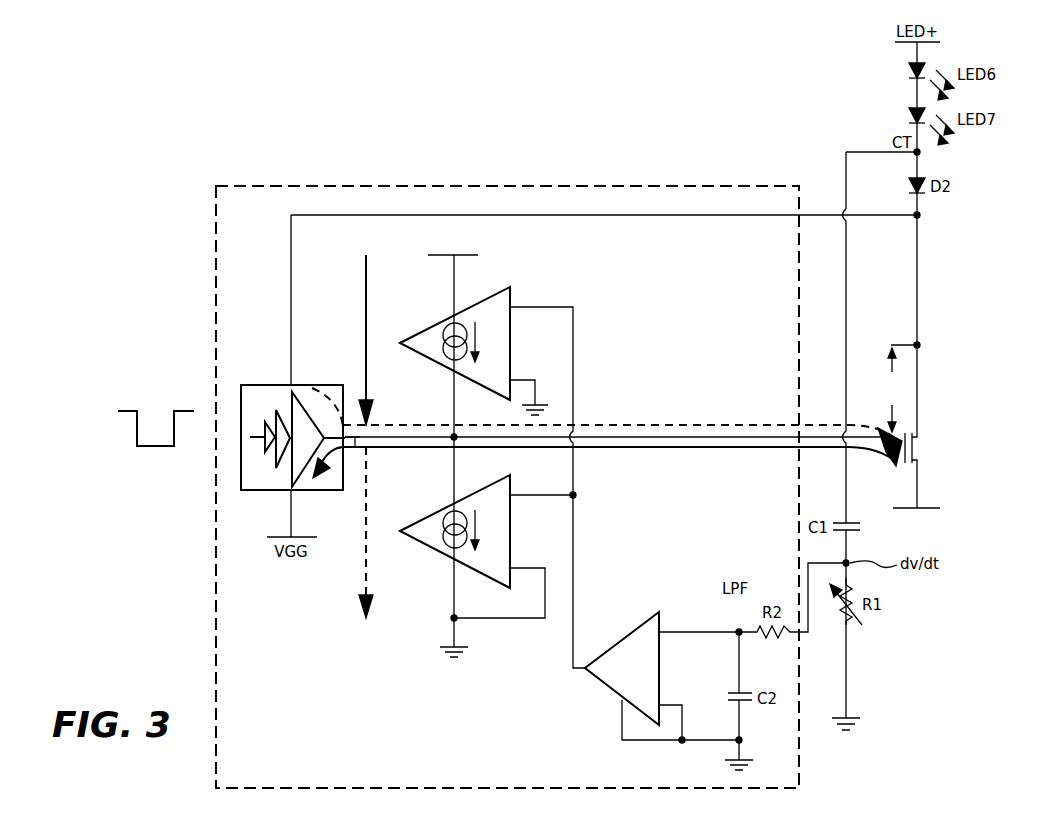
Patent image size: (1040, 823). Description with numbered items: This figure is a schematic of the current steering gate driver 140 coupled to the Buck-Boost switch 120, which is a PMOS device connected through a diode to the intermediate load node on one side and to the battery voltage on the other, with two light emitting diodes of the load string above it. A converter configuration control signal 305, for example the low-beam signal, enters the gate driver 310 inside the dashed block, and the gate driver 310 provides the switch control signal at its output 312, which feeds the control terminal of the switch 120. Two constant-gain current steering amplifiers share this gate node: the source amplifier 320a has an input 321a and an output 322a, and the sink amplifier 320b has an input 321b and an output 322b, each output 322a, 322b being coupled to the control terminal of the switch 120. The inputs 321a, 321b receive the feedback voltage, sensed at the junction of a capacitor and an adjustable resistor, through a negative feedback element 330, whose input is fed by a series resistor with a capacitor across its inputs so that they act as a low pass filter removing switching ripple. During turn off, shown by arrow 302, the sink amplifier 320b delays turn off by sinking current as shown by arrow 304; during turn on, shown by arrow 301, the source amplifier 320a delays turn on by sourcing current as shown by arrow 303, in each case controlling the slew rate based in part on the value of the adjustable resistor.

The current steering gate driver 140 is at (397, 186).
The converter configuration control signal 305 is at (156, 448).
The gate driver 310 is at (245, 384).
The arrow indicating sourcing during the on transition 303 is at (363, 302).
The arrow indicating sinking during the off transition 304 is at (363, 575).
The output of the gate driver 312 is at (357, 442).
The arrow indicating gate driver source current 302 is at (655, 425).
The arrow indicating gate driver sink current 301 is at (680, 448).
The output of the source current steering amplifier 322a is at (452, 421).
The output of the sink current steering amplifier 322b is at (452, 457).
The gate current steering source amplifier 320a is at (418, 330).
The gate current steering sink amplifier 320b is at (418, 545).
The input of the source current steering amplifier 321a is at (547, 305).
The input of the sink current steering amplifier 321b is at (545, 497).
The negative feedback element 330 is at (607, 685).
The Buck-Boost switch 120 is at (920, 457).